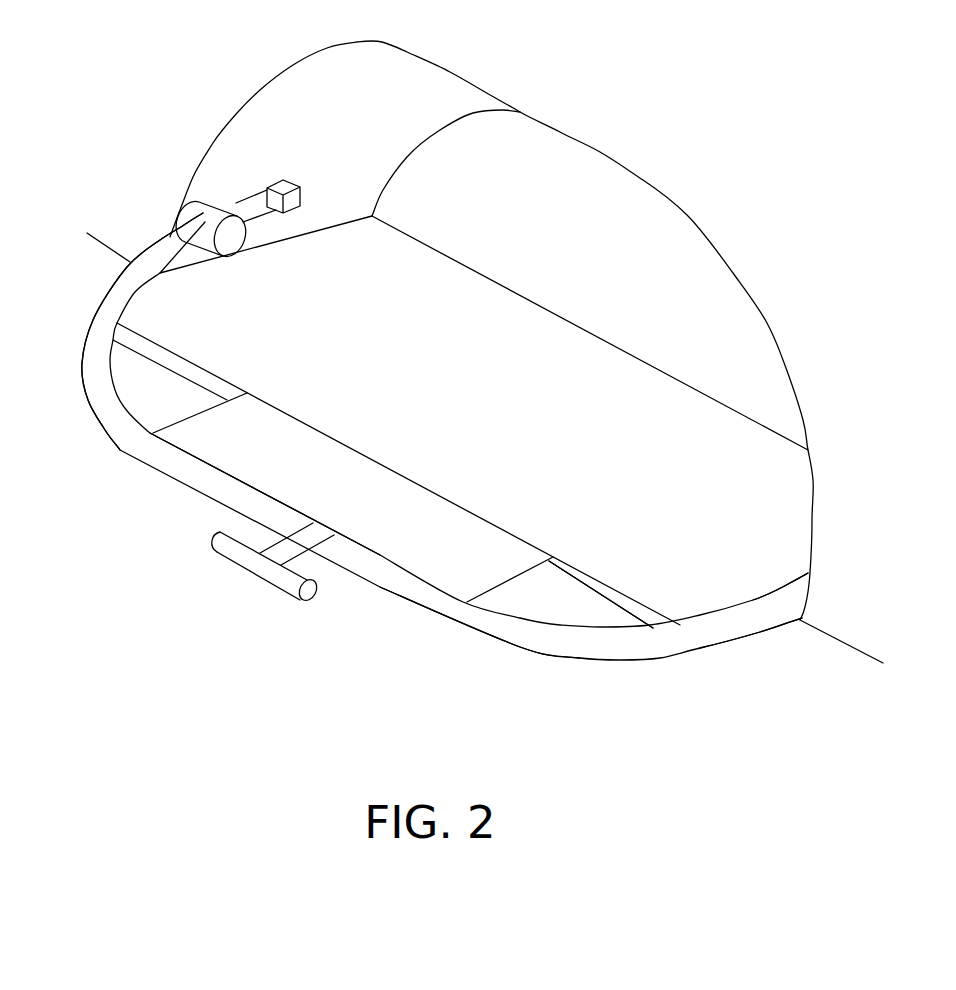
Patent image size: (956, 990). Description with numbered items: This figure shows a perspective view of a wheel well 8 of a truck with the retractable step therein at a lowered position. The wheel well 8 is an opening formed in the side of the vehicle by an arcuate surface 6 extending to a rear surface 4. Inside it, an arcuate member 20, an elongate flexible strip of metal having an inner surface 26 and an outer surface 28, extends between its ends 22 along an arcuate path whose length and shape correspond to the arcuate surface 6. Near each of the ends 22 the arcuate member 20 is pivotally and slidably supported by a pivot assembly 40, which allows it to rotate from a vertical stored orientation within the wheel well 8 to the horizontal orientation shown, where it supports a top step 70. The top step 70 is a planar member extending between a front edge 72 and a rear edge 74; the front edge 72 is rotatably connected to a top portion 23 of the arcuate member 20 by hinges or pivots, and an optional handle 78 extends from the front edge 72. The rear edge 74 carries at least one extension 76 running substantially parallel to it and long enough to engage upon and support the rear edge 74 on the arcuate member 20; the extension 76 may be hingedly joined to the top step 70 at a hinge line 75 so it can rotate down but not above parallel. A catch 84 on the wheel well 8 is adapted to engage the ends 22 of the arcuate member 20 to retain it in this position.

The rear surface 4 is at (650, 247).
The arcuate surface 6 is at (440, 103).
The wheel well 8 is at (755, 478).
The arcuate member 20 is at (107, 393).
The ends 22 is at (261, 216).
The top portion 23 is at (202, 467).
The inner surface 26 is at (123, 292).
The outer surface 28 is at (729, 626).
The pivot assembly 40 is at (231, 240).
The top step 70 is at (415, 513).
The front edge 72 is at (433, 597).
The rear edge 74 is at (520, 530).
The hinge line 75 is at (257, 398).
The extension 76 is at (210, 368).
The handle 78 is at (320, 597).
The catch 84 is at (287, 182).